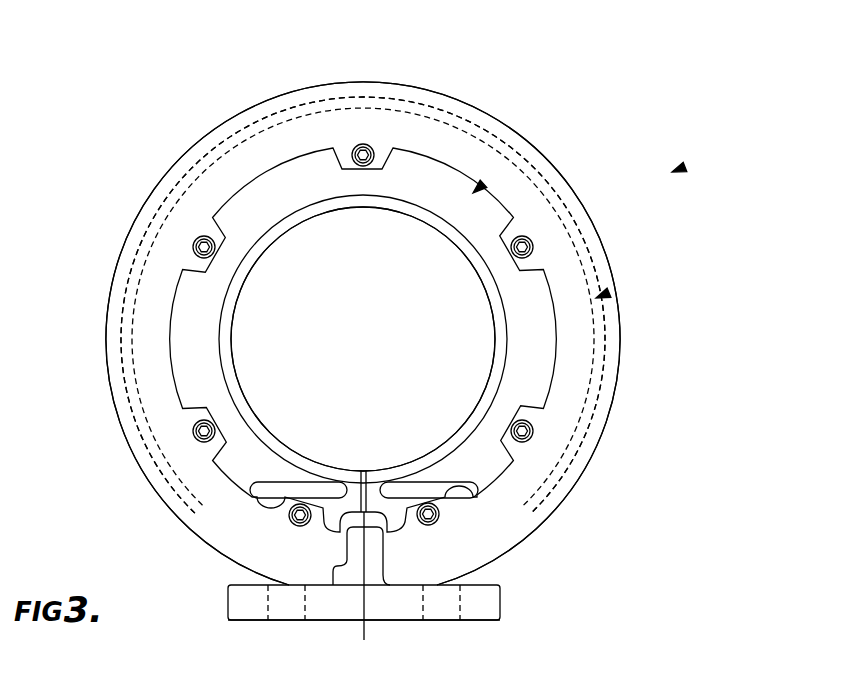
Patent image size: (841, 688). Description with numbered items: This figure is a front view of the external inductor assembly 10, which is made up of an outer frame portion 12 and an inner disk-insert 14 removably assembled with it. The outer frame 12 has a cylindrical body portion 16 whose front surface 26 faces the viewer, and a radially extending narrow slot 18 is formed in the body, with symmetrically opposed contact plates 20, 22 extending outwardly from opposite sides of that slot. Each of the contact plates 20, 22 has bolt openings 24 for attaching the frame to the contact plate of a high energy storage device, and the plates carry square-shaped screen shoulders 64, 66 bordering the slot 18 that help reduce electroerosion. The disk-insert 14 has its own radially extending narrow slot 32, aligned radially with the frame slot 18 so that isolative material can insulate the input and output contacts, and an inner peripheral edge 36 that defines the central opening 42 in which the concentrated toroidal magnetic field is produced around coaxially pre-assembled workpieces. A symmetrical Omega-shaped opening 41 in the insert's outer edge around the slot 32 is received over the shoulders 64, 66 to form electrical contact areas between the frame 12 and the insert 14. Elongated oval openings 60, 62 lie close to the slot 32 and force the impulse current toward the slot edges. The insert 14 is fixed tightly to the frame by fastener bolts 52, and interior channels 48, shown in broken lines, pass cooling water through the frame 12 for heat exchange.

The external inductor assembly 10 is at (678, 170).
The outer frame portion 12 is at (602, 295).
The inner disk-insert 14 is at (478, 188).
The cylindrical body portion 16 is at (400, 106).
The radially extending narrow slot 18 is at (368, 627).
The contact plate 20 is at (237, 612).
The contact plate 22 is at (488, 605).
The bolt openings 24 is at (268, 612).
The front surface 26 is at (246, 137).
The radially extending narrow slot 32 is at (363, 471).
The inner peripheral edge 36 is at (417, 221).
The Omega-shaped opening 41 is at (390, 497).
The central opening 42 is at (267, 313).
The interior channels 48 is at (615, 382).
The fastener bolts 52 is at (353, 152).
The elongated oval opening 60 is at (249, 493).
The elongated oval opening 62 is at (483, 486).
The screen shoulder 64 is at (340, 563).
The screen shoulder 66 is at (377, 568).